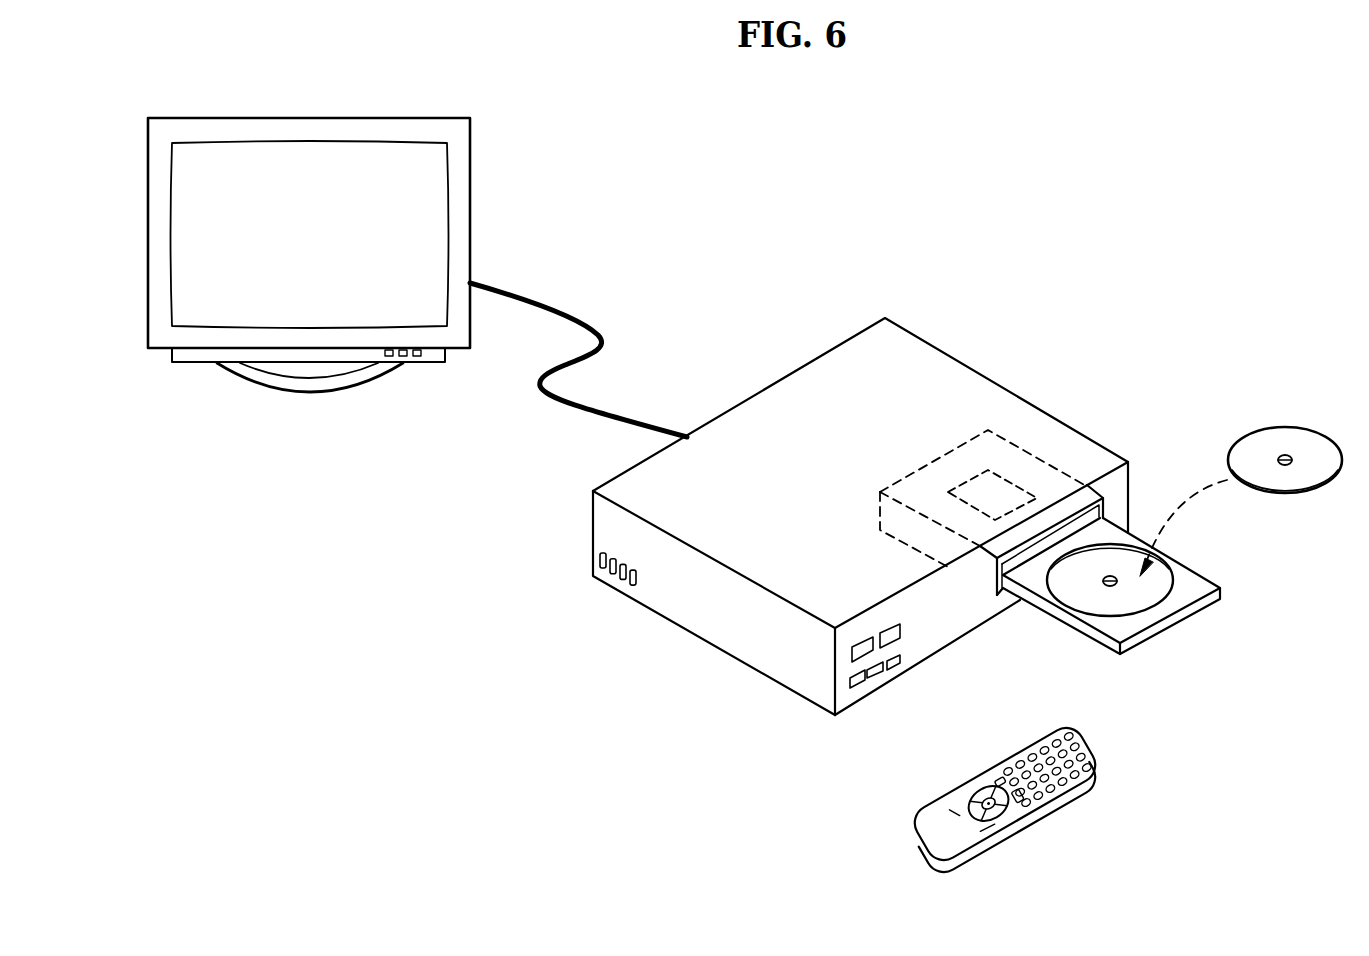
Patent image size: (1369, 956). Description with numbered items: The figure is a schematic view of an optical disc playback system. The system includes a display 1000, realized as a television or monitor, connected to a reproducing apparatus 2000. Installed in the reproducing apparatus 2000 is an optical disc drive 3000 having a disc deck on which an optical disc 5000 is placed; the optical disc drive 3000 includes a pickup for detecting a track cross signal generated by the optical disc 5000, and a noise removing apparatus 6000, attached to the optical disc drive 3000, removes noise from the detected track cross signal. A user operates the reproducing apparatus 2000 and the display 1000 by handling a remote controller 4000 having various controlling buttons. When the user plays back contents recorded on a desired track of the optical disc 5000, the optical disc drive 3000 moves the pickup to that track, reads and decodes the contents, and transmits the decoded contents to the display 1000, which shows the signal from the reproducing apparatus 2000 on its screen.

The display 1000 is at (470, 197).
The reproducing apparatus 2000 is at (713, 647).
The optical disc drive 3000 is at (1035, 458).
The remote controller 4000 is at (1037, 817).
The optical disc 5000 is at (1283, 426).
The noise removing apparatus 6000 is at (963, 484).